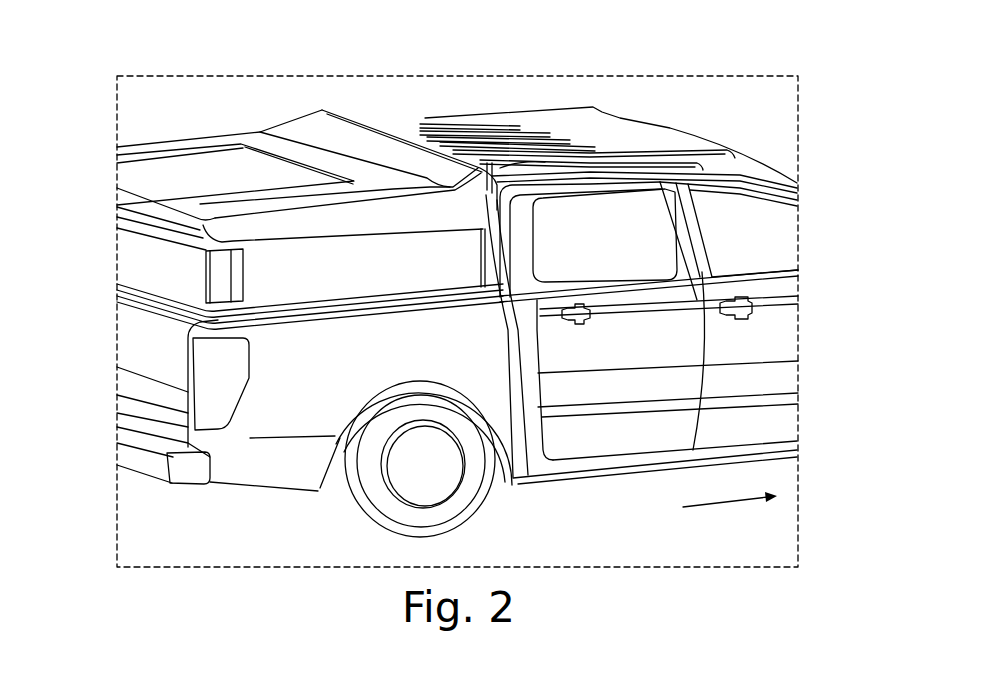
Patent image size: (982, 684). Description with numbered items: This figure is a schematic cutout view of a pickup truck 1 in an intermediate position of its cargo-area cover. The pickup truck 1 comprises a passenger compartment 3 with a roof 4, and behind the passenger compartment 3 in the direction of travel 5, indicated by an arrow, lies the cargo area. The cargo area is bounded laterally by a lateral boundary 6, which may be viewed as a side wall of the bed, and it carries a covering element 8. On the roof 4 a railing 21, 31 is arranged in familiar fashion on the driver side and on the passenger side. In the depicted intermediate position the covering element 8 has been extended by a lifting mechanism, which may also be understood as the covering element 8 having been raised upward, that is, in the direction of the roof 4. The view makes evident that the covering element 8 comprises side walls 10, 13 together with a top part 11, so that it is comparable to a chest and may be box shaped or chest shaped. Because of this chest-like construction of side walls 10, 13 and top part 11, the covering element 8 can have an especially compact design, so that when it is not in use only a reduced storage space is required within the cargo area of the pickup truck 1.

The pickup truck 1 is at (673, 98).
The passenger compartment 3 is at (643, 197).
The roof 4 is at (612, 125).
The direction of travel 5 is at (726, 503).
The lateral boundary 6 is at (290, 420).
The covering element 8 is at (108, 125).
The side wall 10 is at (253, 122).
The top part 11 is at (293, 228).
The side wall 13 is at (287, 281).
The railing 21 is at (697, 152).
The railing 31 is at (517, 109).